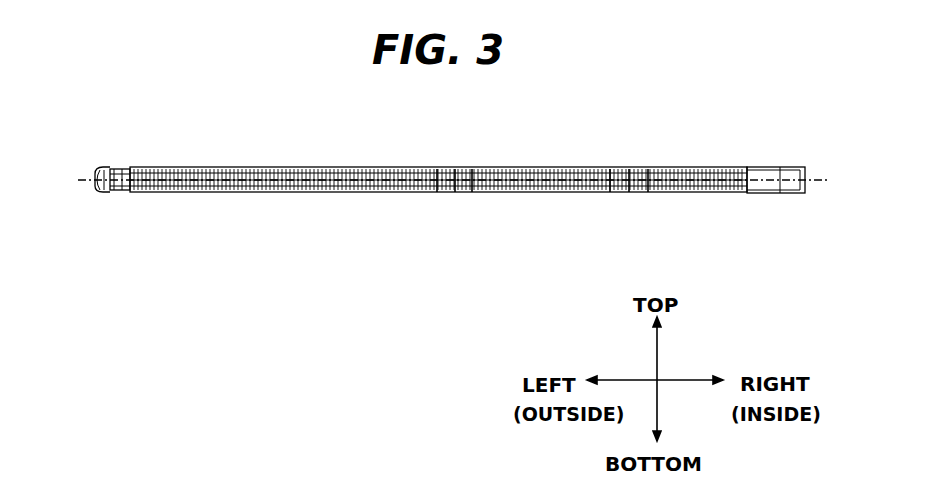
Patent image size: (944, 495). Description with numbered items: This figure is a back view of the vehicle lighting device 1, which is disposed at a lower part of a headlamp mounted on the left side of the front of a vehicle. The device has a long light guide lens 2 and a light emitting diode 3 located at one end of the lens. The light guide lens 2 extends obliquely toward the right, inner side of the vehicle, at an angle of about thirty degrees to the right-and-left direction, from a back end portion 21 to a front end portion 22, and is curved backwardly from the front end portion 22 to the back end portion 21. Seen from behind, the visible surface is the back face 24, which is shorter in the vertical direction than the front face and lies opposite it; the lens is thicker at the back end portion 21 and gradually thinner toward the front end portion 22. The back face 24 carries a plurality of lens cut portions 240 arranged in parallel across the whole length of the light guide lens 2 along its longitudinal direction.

The vehicle lighting device 1 is at (421, 134).
The light guide lens 2 is at (544, 158).
The light emitting diode 3 is at (98, 191).
The back end portion 21 is at (112, 199).
The front end portion 22 is at (772, 199).
The back face 24 is at (289, 194).
The lens cut portions 240 is at (437, 193).